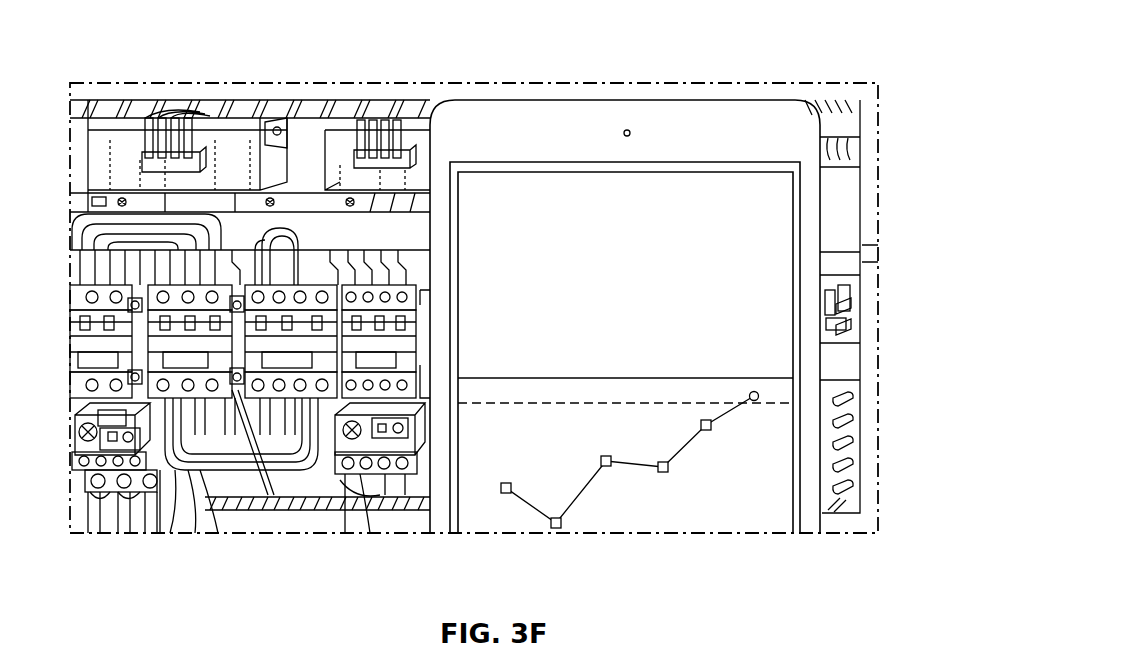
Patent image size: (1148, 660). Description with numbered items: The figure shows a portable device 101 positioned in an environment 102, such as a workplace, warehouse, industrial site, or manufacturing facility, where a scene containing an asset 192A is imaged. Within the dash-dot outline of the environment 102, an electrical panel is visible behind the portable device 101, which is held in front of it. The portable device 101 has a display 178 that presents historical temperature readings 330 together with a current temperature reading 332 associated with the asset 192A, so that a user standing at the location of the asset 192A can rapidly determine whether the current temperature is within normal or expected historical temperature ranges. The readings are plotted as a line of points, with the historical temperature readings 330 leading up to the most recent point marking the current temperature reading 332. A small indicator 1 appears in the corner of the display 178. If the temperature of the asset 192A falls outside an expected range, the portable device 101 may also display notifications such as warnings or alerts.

The environment 102 is at (845, 49).
The portable device 101 is at (725, 146).
The screen indicator 1 is at (625, 347).
The display 178 is at (625, 347).
The asset 192A is at (692, 232).
The historical temperature readings 330 is at (710, 541).
The current temperature reading 332 is at (755, 403).